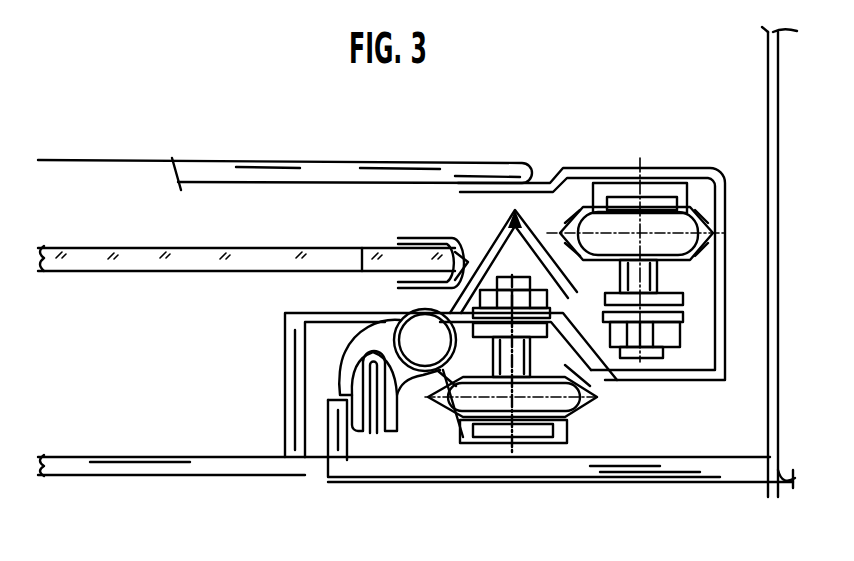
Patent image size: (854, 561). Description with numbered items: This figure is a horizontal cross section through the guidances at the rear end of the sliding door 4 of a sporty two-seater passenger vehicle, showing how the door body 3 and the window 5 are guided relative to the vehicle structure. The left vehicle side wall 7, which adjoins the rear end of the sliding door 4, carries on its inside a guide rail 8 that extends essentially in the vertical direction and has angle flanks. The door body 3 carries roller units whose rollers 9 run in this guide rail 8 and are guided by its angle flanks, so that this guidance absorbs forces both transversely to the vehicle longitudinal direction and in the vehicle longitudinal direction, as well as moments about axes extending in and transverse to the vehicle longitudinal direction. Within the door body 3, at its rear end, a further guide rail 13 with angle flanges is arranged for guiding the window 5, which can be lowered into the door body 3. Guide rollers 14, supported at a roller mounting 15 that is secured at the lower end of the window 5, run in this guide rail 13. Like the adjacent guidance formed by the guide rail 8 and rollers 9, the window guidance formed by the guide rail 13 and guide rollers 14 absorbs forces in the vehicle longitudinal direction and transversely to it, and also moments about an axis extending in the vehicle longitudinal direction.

The door body 3 is at (209, 462).
The sliding door 4 is at (181, 155).
The window 5 is at (167, 272).
The left vehicle side wall 7 is at (658, 484).
The guide rail 8 is at (563, 458).
The rollers 9 is at (598, 398).
The guide rail 13 is at (605, 180).
The guide rollers 14 is at (663, 225).
The roller mounting 15 is at (497, 232).